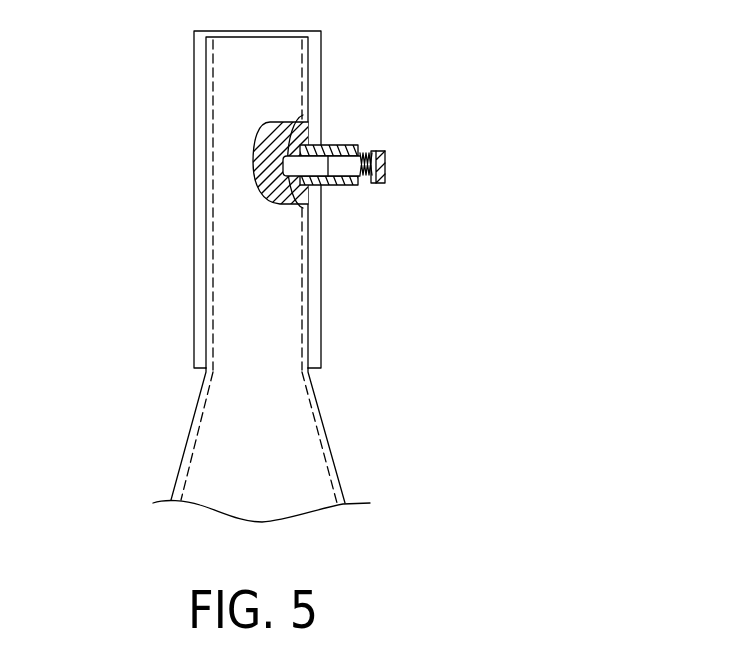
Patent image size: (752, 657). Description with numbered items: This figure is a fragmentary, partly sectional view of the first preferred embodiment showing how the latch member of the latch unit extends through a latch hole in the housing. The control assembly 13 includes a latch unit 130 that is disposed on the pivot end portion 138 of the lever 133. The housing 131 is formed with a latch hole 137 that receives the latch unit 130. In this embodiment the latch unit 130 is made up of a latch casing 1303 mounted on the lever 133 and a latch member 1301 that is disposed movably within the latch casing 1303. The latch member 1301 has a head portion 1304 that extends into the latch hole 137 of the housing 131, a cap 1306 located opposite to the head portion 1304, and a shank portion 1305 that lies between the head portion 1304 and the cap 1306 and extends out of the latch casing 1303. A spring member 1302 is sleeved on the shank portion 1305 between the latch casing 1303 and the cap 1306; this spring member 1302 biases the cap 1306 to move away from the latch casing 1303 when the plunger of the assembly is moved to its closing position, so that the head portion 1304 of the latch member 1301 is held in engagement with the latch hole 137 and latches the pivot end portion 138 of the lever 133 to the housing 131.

The control assembly 13 is at (368, 173).
The latch unit 130 is at (392, 176).
The latch member 1301 is at (313, 181).
The spring member 1302 is at (370, 178).
The latch casing 1303 is at (358, 183).
The head portion 1304 is at (270, 150).
The shank portion 1305 is at (350, 143).
The cap 1306 is at (388, 170).
The housing 131 is at (194, 267).
The lever 133 is at (187, 436).
The latch hole 137 is at (292, 204).
The pivot end portion 138 is at (228, 102).